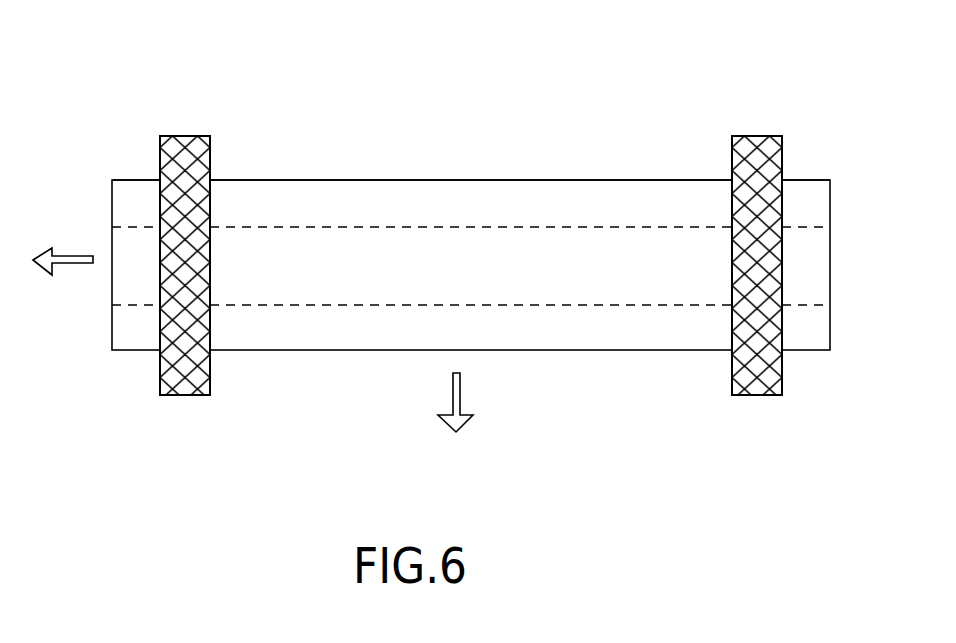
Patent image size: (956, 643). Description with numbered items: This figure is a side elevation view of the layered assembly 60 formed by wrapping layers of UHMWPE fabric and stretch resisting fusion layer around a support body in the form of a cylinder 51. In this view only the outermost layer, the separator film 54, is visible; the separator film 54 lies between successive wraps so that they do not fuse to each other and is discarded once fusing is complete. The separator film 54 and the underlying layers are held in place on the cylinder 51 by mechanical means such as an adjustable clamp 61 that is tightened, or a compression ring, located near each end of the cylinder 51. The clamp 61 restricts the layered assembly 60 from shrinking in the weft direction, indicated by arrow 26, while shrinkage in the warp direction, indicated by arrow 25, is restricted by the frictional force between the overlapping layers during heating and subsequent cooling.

The arrow indicating first direction 25 is at (463, 385).
The arrow indicating second direction 26 is at (62, 254).
The cylinder 51 is at (798, 207).
The separator film 54 is at (598, 178).
The layered assembly 60 is at (422, 163).
The adjustable clamp 61 is at (202, 138).